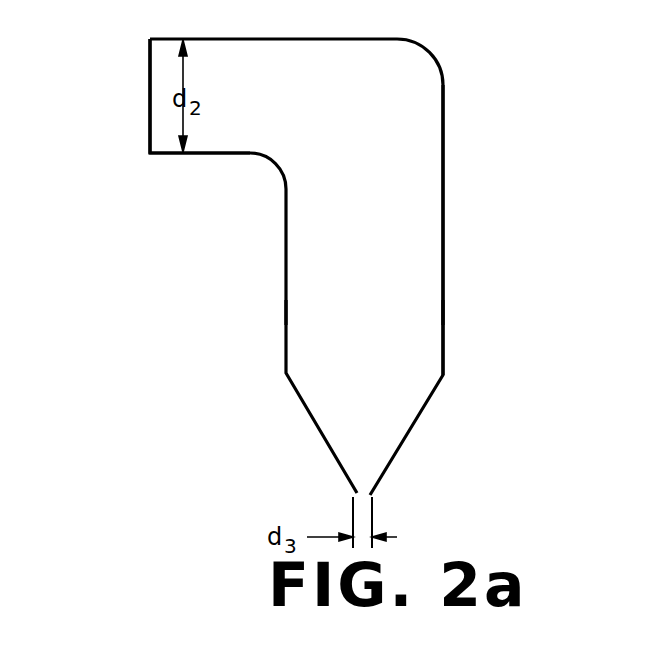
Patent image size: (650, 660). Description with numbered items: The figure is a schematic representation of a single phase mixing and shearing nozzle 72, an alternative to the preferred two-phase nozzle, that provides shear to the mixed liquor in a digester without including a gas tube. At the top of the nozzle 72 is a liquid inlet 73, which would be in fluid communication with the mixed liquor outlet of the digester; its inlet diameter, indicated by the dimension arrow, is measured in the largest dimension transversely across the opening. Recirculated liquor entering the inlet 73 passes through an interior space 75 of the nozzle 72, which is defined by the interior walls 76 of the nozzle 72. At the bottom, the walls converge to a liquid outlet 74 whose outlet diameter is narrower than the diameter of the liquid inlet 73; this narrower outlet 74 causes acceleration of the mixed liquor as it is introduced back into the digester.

The single phase nozzle 72 is at (286, 253).
The liquid inlet 73 is at (150, 93).
The liquid outlet 74 is at (372, 500).
The interior space 75 is at (388, 268).
The interior walls 76 is at (286, 312).